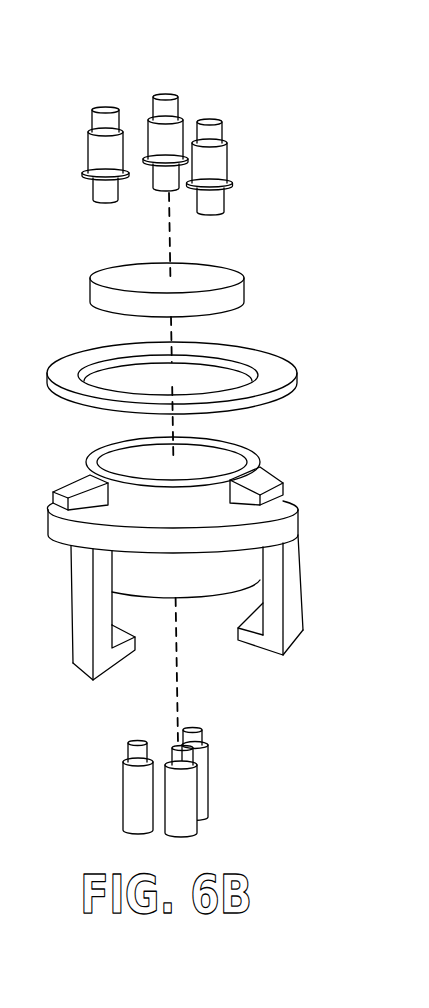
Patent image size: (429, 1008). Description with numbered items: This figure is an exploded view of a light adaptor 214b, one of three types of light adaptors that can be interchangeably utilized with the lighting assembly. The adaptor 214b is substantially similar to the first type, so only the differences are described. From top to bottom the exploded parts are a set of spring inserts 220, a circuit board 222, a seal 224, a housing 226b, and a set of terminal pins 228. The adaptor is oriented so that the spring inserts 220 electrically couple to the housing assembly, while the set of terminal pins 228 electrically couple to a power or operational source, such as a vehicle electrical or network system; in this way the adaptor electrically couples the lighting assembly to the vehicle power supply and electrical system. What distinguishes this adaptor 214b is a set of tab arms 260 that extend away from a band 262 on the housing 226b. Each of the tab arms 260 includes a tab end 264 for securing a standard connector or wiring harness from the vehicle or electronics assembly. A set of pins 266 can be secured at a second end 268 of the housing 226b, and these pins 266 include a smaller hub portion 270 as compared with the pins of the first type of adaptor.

The light adaptor 214b is at (92, 50).
The spring inserts 220 is at (240, 162).
The circuit board 222 is at (247, 283).
The seal 224 is at (273, 372).
The housing 226b is at (303, 483).
The terminal pins 228 is at (215, 753).
The tab arms 260 is at (80, 610).
The band 262 is at (67, 518).
The tab end 264 is at (120, 635).
The pins 266 is at (132, 808).
The second end 268 is at (195, 597).
The hub portion 270 is at (132, 752).